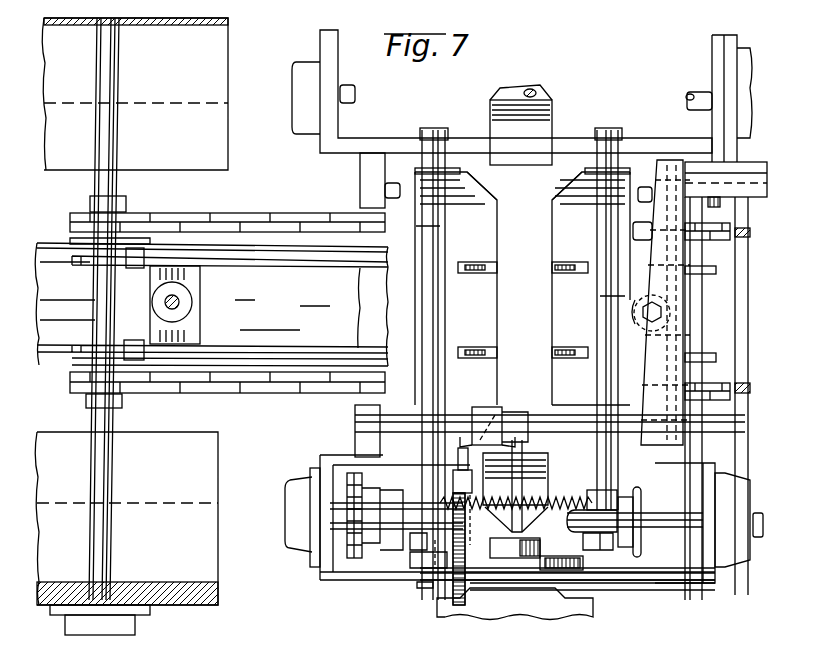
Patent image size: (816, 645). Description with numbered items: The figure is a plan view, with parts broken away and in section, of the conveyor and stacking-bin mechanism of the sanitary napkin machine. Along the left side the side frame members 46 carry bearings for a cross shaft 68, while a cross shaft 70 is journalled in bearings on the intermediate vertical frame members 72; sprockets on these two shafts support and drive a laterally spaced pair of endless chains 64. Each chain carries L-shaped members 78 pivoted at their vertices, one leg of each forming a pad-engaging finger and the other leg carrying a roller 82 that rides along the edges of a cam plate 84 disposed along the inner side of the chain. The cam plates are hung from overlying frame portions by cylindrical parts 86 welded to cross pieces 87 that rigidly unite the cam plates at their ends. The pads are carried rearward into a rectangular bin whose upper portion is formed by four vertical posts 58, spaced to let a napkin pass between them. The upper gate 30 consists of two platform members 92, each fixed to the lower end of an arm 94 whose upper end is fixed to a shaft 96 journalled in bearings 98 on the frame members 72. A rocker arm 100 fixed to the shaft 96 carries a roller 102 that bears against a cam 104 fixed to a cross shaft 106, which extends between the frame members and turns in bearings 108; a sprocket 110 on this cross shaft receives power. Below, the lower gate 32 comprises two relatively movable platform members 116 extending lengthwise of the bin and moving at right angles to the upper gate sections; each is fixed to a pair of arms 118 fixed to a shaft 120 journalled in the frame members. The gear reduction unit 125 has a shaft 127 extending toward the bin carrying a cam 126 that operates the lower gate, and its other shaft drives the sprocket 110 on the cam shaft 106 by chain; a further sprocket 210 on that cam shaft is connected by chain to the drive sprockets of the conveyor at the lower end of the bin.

The upper movable platform or gate 30 is at (508, 488).
The lower movable platform or gate 32 is at (478, 313).
The side frame members 46 is at (218, 594).
The vertical posts 58 is at (552, 267).
The endless chains 64 is at (300, 213).
The cross shaft 68 is at (118, 178).
The cross shaft 70 is at (705, 300).
The vertical frame members 72 is at (730, 40).
The L-shaped member 78 is at (122, 228).
The roller 82 is at (135, 268).
The cam plate 84 is at (211, 304).
The cylindrical parts 86 is at (192, 302).
The cross pieces 87 is at (200, 280).
The platform members 92 is at (552, 108).
The arm 94 is at (540, 88).
The shaft 96 is at (557, 414).
The bearings 98 is at (355, 435).
The rocker arm 100 is at (472, 410).
The roller 102 is at (453, 483).
The cam 104 is at (452, 585).
The cross shaft 106 is at (655, 530).
The bearings 108 is at (738, 567).
The sprocket 110 is at (641, 505).
The platform members 116 is at (542, 186).
The arms 118 is at (455, 170).
The shaft 120 is at (440, 226).
The gear reduction unit 125 is at (448, 610).
The cam 126 is at (570, 555).
The shaft 127 is at (510, 585).
The sprocket 210 is at (362, 480).